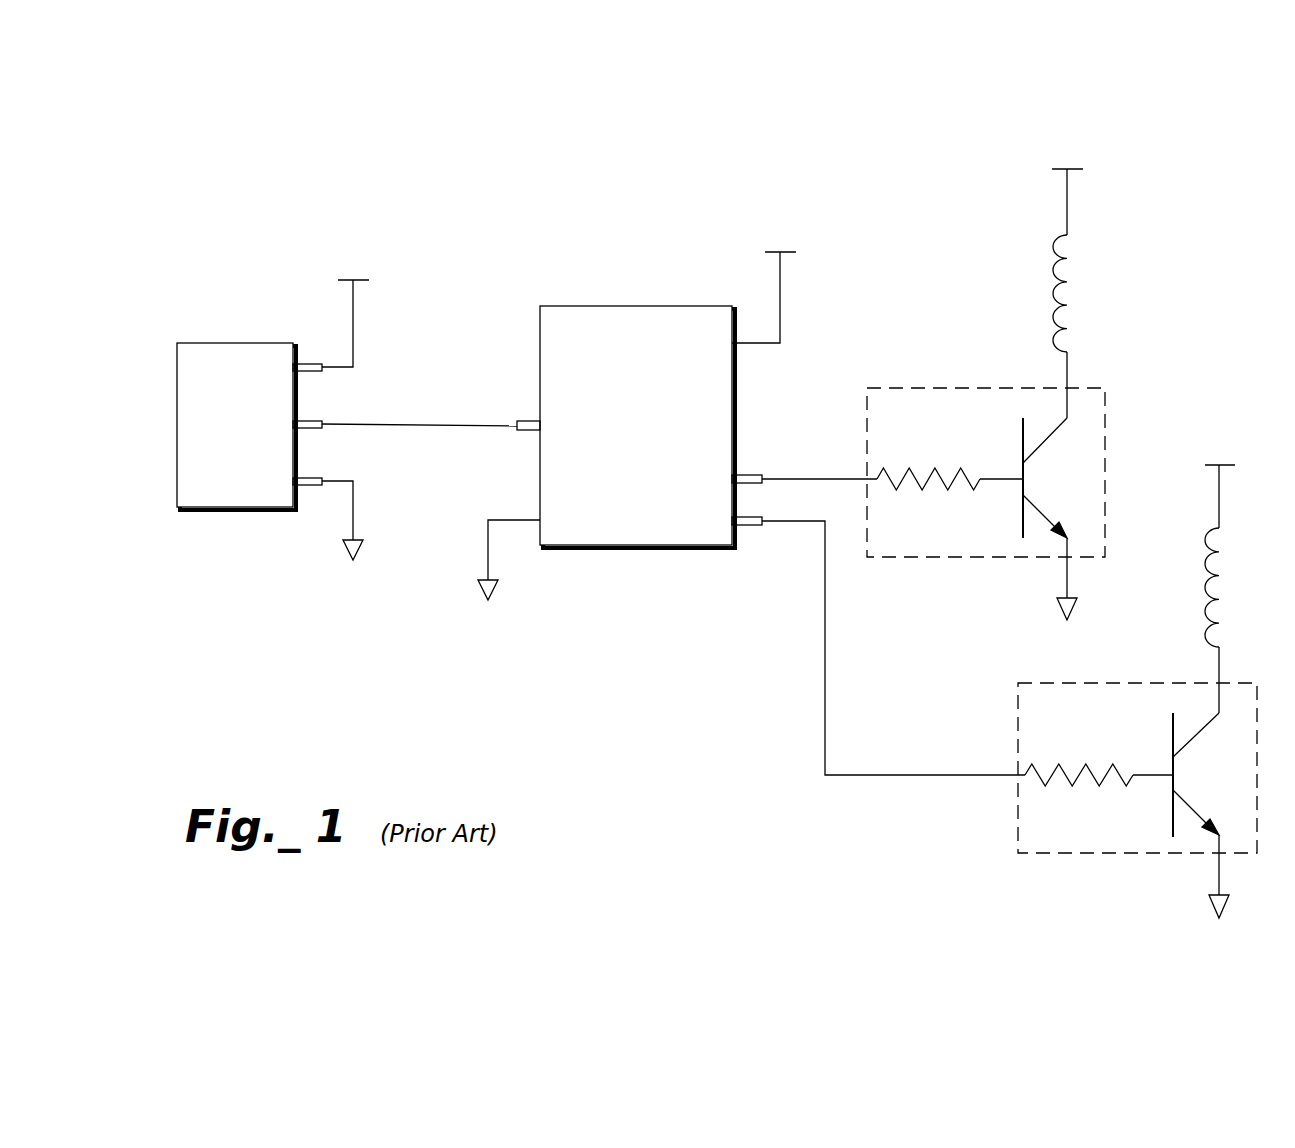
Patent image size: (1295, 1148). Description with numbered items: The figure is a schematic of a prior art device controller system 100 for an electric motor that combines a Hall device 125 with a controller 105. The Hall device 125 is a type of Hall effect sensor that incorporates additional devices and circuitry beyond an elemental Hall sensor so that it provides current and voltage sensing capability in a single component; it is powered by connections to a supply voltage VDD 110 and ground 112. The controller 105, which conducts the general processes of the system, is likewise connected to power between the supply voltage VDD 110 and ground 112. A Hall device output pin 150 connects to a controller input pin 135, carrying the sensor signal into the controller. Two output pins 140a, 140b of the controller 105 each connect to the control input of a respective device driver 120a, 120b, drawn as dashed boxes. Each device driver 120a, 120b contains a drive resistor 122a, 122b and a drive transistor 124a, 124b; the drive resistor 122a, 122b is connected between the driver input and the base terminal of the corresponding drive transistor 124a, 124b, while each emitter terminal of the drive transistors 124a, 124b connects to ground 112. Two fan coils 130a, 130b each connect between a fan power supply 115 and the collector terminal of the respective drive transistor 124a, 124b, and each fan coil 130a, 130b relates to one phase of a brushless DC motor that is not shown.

The device controller system 100 is at (1203, 113).
The controller 105 is at (632, 306).
The supply voltage VDD 110 is at (354, 318).
The ground 112 is at (354, 517).
The fan power supply 115 is at (1070, 207).
The device driver 120a is at (895, 557).
The device driver 120b is at (1045, 853).
The drive resistor 122a is at (905, 470).
The drive resistor 122b is at (1055, 768).
The drive transistor 124a is at (1025, 472).
The drive transistor 124b is at (1175, 770).
The Hall device 125 is at (235, 343).
The fan coil 130a is at (1062, 282).
The fan coil 130b is at (1212, 578).
The controller input pin 135 is at (525, 420).
The output pin 140a is at (752, 474).
The output pin 140b is at (758, 526).
The Hall device output pin 150 is at (323, 428).